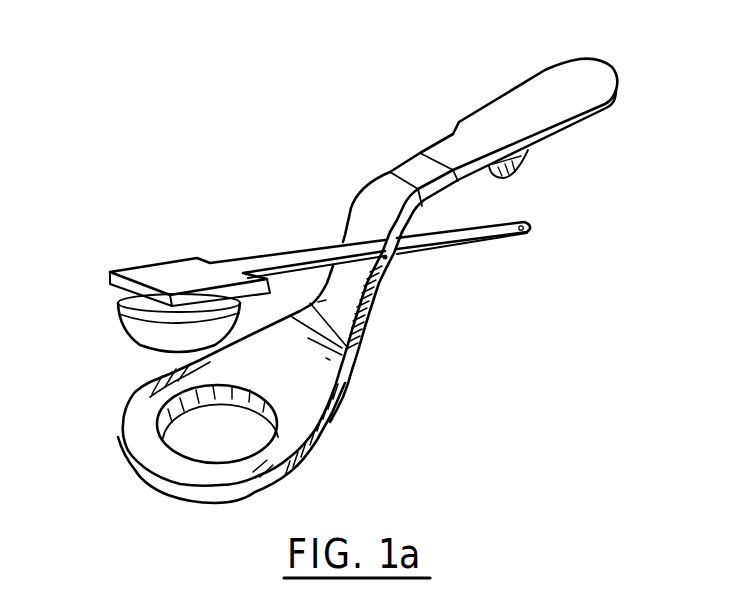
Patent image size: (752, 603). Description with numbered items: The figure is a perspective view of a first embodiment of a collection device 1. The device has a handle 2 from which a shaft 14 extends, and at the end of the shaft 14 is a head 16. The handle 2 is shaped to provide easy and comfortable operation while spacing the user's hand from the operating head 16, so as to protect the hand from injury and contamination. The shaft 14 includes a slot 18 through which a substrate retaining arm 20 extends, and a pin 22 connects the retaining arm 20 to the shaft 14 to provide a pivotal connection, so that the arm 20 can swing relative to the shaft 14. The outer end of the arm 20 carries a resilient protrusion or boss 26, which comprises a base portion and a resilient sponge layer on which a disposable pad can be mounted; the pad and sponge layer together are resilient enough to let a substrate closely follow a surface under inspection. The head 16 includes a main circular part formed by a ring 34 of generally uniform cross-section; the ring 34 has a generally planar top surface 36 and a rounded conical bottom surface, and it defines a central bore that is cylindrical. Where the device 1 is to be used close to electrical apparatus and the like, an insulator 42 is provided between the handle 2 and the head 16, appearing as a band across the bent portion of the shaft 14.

The collection device 1 is at (476, 363).
The handle 2 is at (573, 77).
The shaft 14 is at (368, 204).
The head 16 is at (339, 393).
The slot 18 is at (343, 243).
The substrate retaining arm 20 is at (526, 234).
The pin 22 is at (386, 259).
The resilient protrusion or boss 26 is at (147, 332).
The ring 34 is at (192, 489).
The top surface 36 is at (146, 437).
The insulator 42 is at (417, 168).